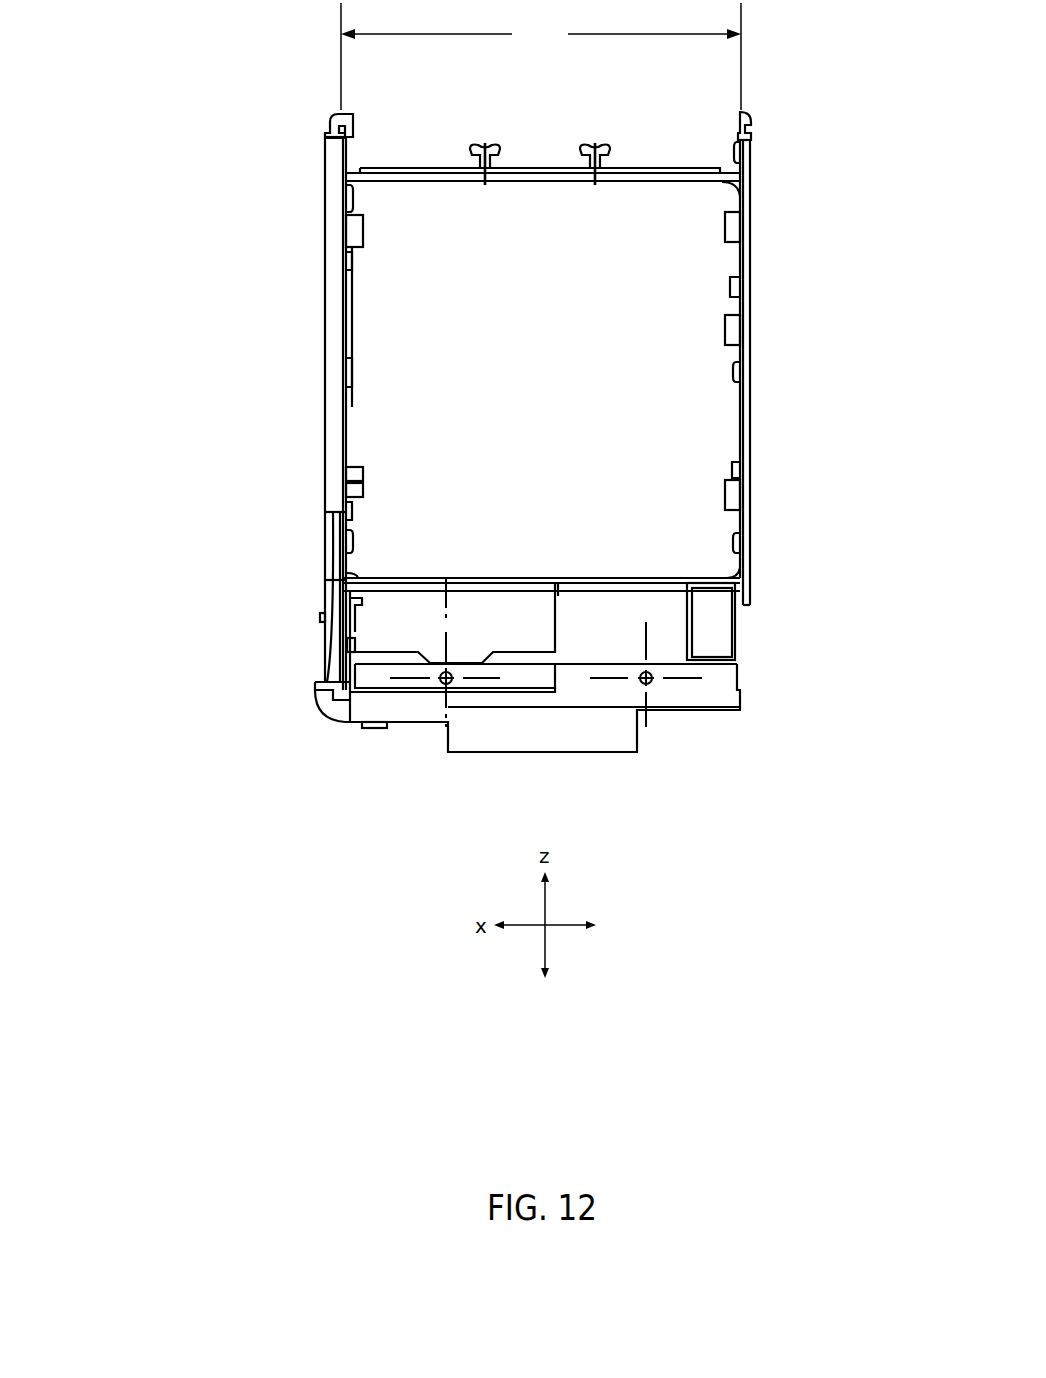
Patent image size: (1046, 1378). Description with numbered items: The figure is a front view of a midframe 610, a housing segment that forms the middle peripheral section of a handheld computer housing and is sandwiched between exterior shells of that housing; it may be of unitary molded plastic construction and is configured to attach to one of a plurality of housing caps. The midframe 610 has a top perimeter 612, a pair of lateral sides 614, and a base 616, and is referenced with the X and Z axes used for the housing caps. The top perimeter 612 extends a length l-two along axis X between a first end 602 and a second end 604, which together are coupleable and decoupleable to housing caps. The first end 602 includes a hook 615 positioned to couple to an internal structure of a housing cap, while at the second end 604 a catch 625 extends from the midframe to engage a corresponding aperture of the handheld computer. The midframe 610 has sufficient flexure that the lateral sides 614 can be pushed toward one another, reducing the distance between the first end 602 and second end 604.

The midframe 610 is at (262, 480).
The first end 602 is at (312, 123).
The second end 604 is at (769, 123).
The top perimeter 612 is at (638, 180).
The lateral sides 614 is at (325, 392).
The hook 615 is at (332, 114).
The catch 625 is at (752, 114).
The base 616 is at (595, 717).